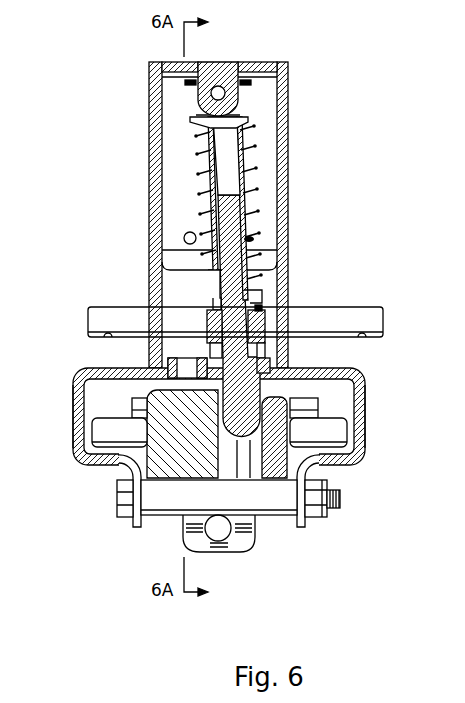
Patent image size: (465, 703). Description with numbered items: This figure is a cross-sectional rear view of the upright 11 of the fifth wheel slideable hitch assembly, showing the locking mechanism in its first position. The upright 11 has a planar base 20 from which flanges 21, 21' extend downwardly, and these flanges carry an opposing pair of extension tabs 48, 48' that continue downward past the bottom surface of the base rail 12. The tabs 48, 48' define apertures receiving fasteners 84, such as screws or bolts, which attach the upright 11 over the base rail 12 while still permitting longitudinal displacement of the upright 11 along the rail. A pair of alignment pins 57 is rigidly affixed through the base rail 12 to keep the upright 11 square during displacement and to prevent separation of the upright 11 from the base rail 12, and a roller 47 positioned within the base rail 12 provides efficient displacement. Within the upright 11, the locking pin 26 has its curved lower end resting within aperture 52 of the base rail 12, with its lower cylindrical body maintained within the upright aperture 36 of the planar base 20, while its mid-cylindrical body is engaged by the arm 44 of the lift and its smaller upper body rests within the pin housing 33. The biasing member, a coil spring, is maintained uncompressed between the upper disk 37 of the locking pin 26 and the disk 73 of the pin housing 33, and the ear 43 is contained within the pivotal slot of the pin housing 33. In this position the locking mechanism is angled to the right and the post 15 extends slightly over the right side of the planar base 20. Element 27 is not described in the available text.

The upright 11 is at (283, 110).
The ear 43 is at (222, 70).
The disk 73 is at (248, 118).
The pin housing 33 is at (250, 148).
The locking pin 26 is at (222, 257).
The arm 44 is at (208, 317).
The upper disk 37 is at (262, 313).
The post 15 is at (348, 307).
The upright aperture 36 is at (200, 353).
The planar base 20 is at (218, 436).
The flange 21 is at (385, 416).
The flange 21' is at (51, 416).
The alignment pin 57 is at (333, 434).
The base rail 12 is at (290, 458).
The roller 47 is at (178, 460).
The extension tab 48 is at (329, 518).
The extension tab 48' is at (107, 517).
The fastener 84 is at (163, 516).
The mounting block 27 is at (222, 546).
The base rail aperture 52 is at (250, 468).